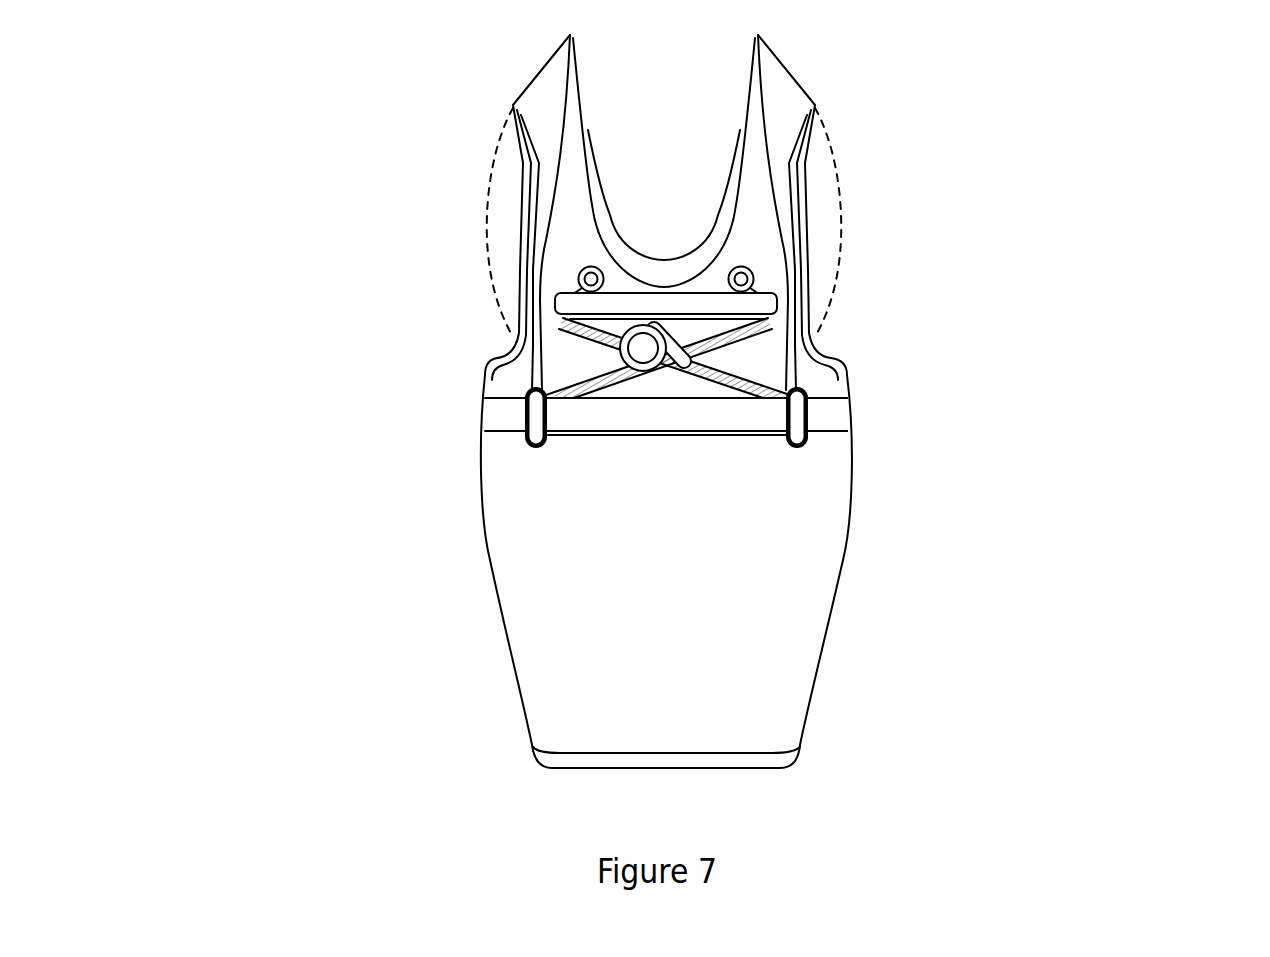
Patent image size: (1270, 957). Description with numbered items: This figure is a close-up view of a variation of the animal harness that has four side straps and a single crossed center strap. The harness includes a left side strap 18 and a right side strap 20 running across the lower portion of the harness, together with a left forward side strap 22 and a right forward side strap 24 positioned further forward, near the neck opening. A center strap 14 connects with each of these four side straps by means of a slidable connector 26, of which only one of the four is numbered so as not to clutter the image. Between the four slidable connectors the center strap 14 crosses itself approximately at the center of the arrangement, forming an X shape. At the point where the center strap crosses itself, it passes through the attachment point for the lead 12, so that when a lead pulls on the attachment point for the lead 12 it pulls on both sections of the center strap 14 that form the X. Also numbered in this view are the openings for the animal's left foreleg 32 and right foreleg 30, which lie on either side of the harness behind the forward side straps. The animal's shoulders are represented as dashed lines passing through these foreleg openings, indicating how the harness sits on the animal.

The attachment point for the lead 12 is at (627, 355).
The center strap 14 is at (690, 358).
The left side strap 18 is at (508, 410).
The right side strap 20 is at (827, 412).
The left forward side strap 22 is at (560, 263).
The right forward side strap 24 is at (773, 270).
The slidable connector 26 is at (525, 448).
The opening for the animal's right foreleg 30 is at (812, 210).
The opening for the animal's left foreleg 32 is at (517, 192).